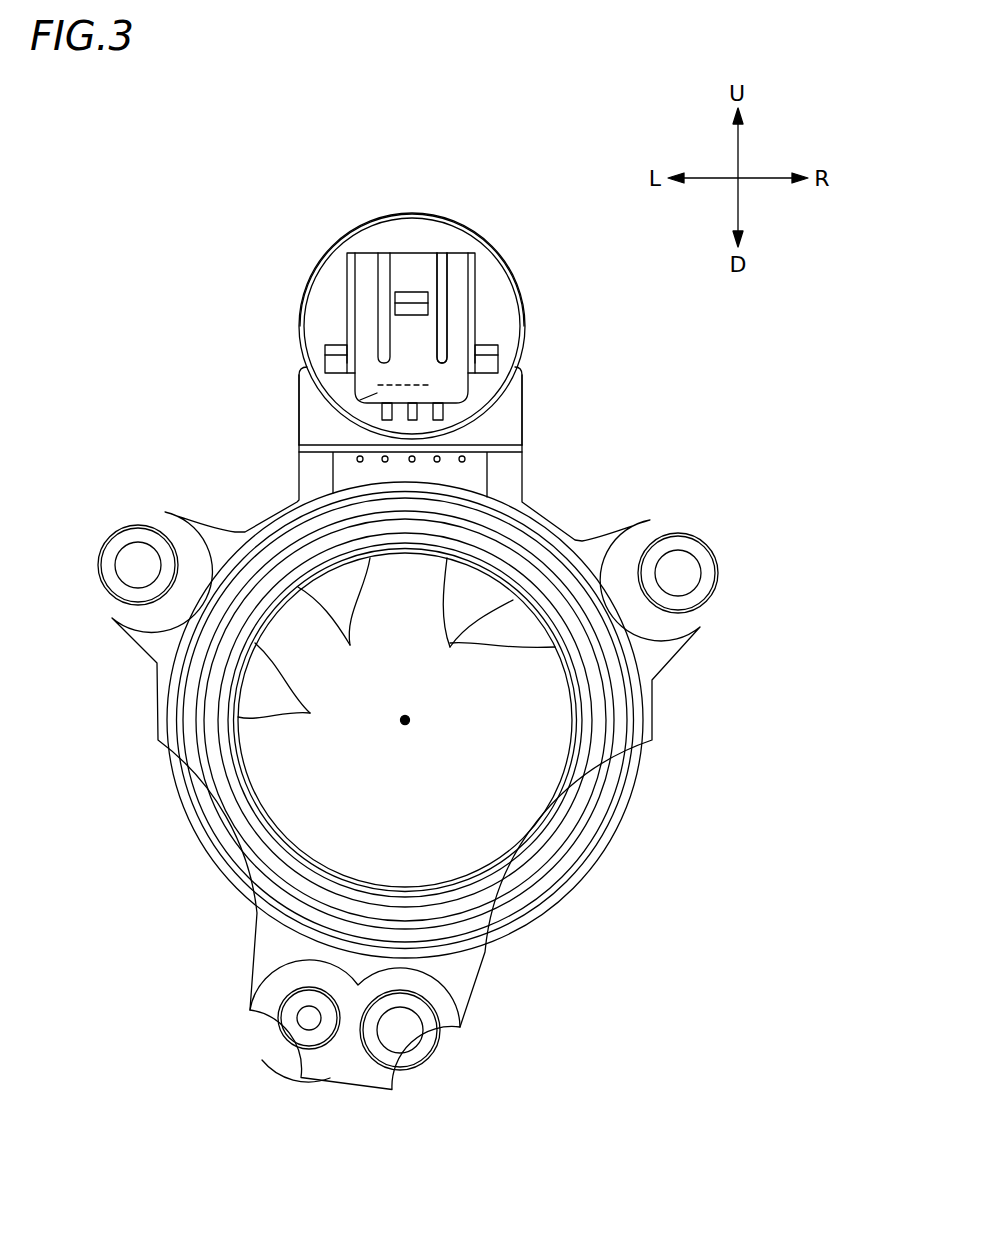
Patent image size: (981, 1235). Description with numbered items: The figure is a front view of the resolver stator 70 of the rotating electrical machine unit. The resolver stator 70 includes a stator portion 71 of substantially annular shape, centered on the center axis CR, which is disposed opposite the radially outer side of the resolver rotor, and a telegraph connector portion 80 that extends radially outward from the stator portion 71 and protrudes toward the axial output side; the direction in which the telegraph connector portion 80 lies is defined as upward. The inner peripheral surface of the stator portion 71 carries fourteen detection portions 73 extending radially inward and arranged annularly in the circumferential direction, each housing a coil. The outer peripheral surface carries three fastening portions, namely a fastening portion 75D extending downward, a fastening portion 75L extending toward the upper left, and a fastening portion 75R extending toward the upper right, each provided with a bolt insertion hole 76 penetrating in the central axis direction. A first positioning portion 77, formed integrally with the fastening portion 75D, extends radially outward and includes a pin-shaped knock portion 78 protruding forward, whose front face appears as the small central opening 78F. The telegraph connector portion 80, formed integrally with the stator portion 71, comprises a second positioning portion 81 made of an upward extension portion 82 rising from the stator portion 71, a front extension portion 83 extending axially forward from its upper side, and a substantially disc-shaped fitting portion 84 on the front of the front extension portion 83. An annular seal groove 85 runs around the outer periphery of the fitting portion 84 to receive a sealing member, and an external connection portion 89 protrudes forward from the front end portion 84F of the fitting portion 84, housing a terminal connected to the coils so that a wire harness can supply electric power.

The resolver stator 70 is at (620, 301).
The stator portion 71 is at (604, 844).
The detection portions 73 is at (396, 642).
The center axis CR is at (409, 722).
The fastening portion 75L is at (107, 528).
The fastening portion 75R is at (717, 545).
The fastening portion 75D is at (447, 1060).
The bolt insertion holes 76 is at (137, 567).
The first positioning portion 77 is at (297, 1067).
The knock portion 78 is at (280, 1018).
The boss hole 78F is at (308, 1015).
The telegraph connector portion 80 is at (288, 396).
The second positioning portion 81 is at (425, 355).
The upward extension portion 82 is at (513, 472).
The front extension portion 83 is at (513, 427).
The fitting portion 84 is at (425, 326).
The front end portion 84F is at (327, 308).
The seal groove 85 is at (449, 213).
The external connection portion 89 is at (450, 307).